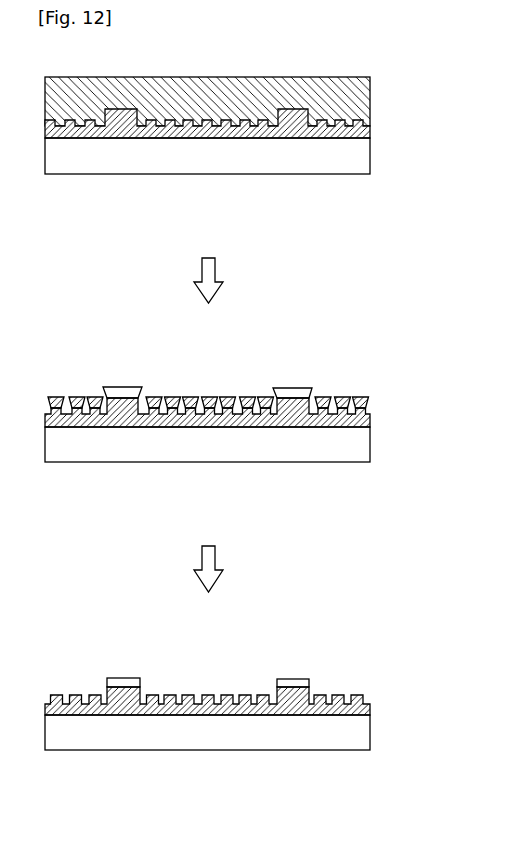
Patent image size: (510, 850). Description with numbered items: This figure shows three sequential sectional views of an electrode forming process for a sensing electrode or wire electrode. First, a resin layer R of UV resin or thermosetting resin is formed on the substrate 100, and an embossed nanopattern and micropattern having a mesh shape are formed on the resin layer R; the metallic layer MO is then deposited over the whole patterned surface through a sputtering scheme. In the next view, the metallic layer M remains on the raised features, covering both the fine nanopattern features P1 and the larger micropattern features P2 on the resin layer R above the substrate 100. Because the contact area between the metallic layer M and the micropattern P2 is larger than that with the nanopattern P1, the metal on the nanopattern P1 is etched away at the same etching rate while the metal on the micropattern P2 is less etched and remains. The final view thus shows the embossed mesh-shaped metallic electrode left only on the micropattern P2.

The metal oxide layer MO is at (208, 92).
The substrate 100 is at (177, 162).
The resin layer R is at (290, 135).
The metallic layer M is at (122, 388).
The first pattern P1 is at (227, 406).
The second pattern P2 is at (295, 389).